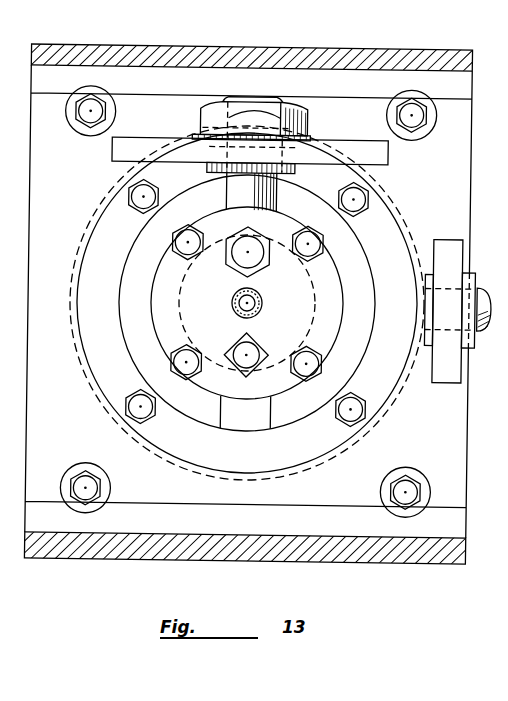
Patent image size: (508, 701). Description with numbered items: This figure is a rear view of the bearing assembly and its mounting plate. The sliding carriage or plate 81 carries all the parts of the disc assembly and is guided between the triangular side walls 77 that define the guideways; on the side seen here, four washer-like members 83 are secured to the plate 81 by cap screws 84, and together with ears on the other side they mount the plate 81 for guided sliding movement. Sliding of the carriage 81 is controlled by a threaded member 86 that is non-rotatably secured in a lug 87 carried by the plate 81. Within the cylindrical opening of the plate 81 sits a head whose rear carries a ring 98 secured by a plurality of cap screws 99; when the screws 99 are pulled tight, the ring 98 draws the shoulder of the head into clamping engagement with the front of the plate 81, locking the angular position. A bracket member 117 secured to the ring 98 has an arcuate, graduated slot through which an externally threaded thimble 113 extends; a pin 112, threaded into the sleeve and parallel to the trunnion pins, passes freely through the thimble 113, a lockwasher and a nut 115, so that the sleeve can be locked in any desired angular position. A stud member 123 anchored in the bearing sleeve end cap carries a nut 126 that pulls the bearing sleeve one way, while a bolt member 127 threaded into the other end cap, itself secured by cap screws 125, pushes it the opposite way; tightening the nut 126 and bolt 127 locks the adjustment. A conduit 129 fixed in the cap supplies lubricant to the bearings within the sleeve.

The side walls 77 is at (62, 560).
The sliding carriage or plate 81 is at (411, 192).
The washer-like members 83 is at (112, 97).
The cap screws 84 is at (85, 105).
The threaded member 86 is at (483, 284).
The lug 87 is at (447, 237).
The ring 98 is at (100, 253).
The cap screws 99 is at (128, 195).
The pin 112 is at (272, 199).
The externally threaded thimble 113 is at (277, 101).
The nut 115 is at (205, 112).
The bracket member 117 is at (118, 155).
The stud member 123 is at (242, 260).
The cap screws 125 is at (190, 350).
The nut 126 is at (259, 262).
The bolt member 127 is at (258, 346).
The conduit 129 is at (233, 304).